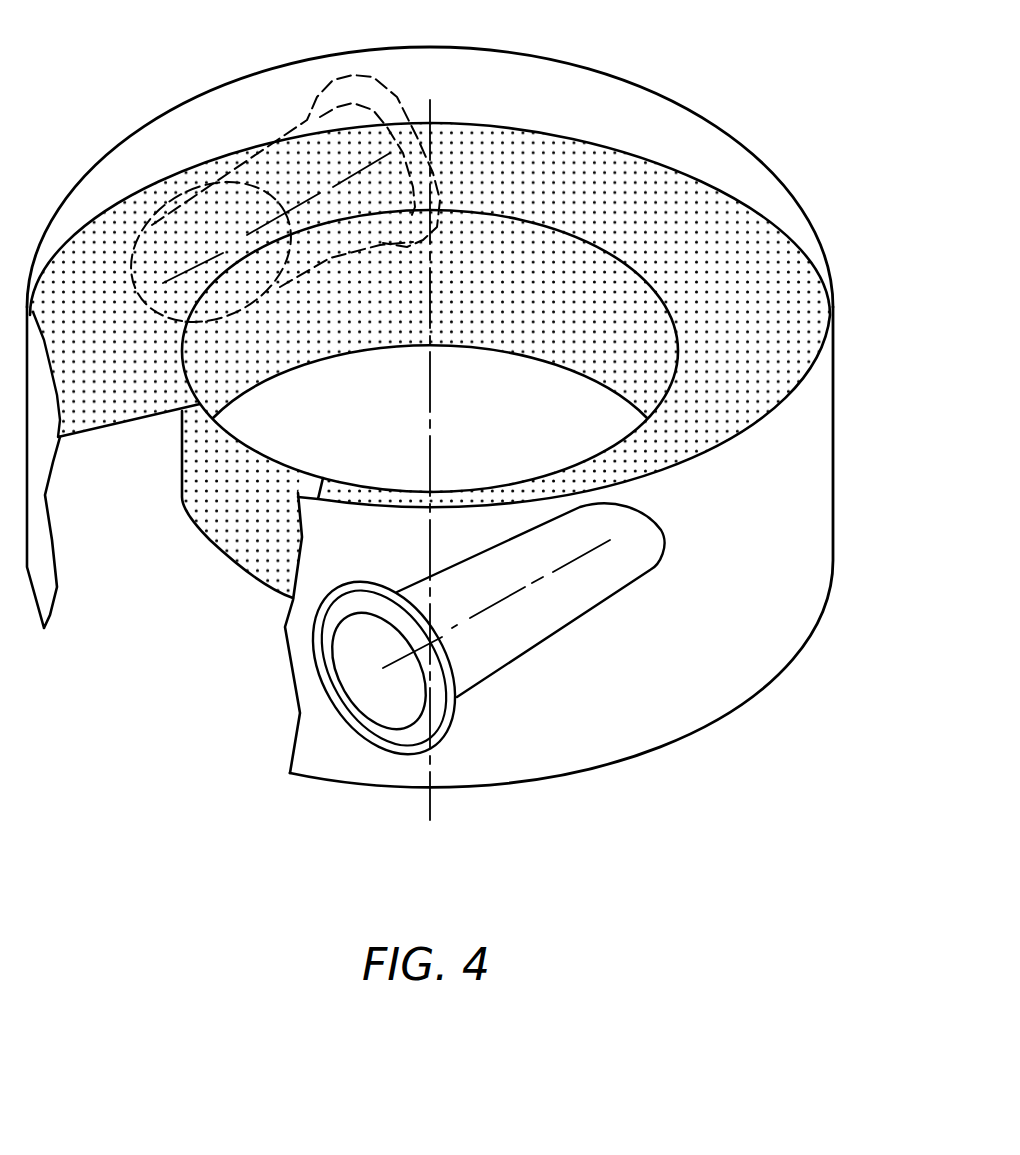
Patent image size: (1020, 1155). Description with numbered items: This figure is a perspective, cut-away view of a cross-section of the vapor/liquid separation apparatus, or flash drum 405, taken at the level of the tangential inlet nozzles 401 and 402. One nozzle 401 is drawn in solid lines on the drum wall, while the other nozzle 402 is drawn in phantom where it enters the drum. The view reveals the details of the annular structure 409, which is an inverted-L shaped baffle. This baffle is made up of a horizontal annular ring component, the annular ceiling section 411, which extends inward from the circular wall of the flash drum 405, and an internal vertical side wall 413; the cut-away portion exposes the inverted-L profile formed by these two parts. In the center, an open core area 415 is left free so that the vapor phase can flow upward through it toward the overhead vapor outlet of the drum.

The tangential inlet nozzle 401 is at (382, 692).
The tangential inlet nozzle 402 is at (350, 73).
The flash drum 405 is at (878, 444).
The annular structure 409 is at (732, 200).
The annular ceiling section 411 is at (577, 183).
The internal vertical side wall 413 is at (245, 492).
The open core area 415 is at (498, 426).